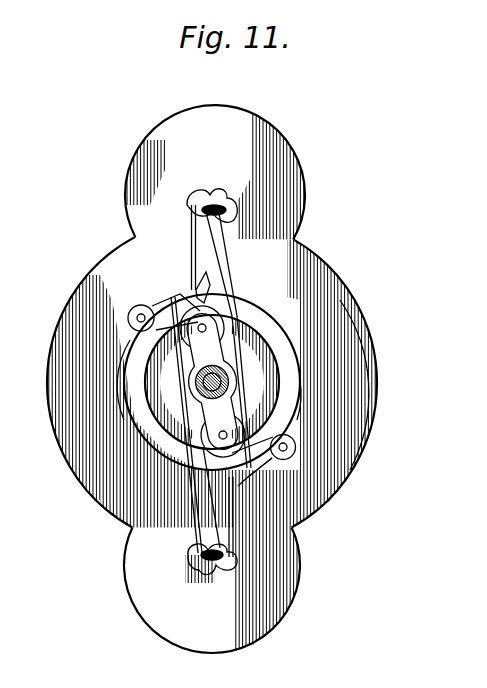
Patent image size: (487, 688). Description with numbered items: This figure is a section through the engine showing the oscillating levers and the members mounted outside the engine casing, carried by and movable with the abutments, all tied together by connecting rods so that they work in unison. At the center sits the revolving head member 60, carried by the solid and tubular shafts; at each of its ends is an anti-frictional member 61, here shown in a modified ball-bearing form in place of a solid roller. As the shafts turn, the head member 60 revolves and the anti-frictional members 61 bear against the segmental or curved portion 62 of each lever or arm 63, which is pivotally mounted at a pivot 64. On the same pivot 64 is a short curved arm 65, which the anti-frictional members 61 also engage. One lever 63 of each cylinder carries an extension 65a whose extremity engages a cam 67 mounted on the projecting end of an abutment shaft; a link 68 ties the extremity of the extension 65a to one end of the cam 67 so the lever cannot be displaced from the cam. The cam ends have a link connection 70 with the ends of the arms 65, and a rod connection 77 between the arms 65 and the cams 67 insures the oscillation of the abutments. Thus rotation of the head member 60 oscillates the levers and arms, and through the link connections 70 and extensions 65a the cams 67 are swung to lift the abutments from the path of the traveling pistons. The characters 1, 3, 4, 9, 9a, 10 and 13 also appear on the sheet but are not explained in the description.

The pivot shaft 1 is at (196, 384).
The hub 3 is at (195, 369).
The base disk 4 is at (348, 320).
The arm end 9 is at (255, 508).
The guide rod 9a is at (229, 527).
The disk face 10 is at (355, 413).
The lobes 13 is at (213, 380).
The revolving head member 60 is at (208, 348).
The anti-frictional member 61 is at (228, 326).
The segmental or curved portion 62 is at (292, 367).
The lever or arm 63 is at (127, 343).
The pivot 64 is at (134, 307).
The short curved arm 65 is at (180, 294).
The extension 65a is at (233, 215).
The cam 67 is at (213, 190).
The link 68 is at (226, 203).
The link connection 70 is at (197, 243).
The rod connection 77 is at (230, 274).